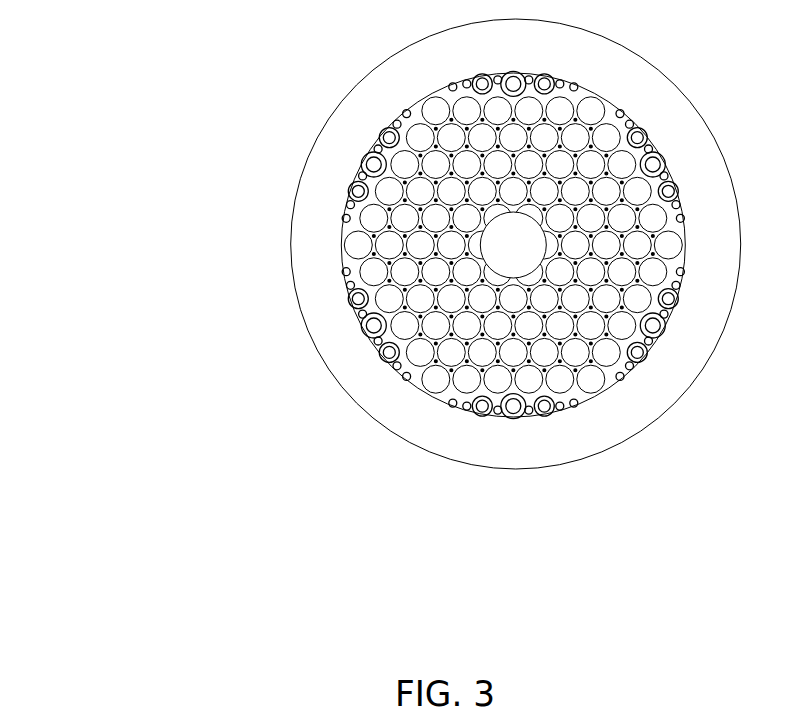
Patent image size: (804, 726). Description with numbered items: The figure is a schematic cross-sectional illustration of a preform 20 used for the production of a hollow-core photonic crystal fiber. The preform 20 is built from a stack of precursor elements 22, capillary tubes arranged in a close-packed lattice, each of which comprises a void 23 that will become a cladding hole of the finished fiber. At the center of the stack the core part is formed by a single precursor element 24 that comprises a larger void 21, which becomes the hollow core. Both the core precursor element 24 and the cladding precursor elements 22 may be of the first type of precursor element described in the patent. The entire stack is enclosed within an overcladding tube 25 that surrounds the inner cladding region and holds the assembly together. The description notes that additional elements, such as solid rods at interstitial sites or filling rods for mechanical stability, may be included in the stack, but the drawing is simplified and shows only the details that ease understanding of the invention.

The preform 20 is at (392, 257).
The void 21 is at (512, 247).
The precursor elements 22 is at (438, 297).
The void 23 is at (448, 297).
The precursor element 24 is at (390, 286).
The overcladding tube 25 is at (362, 110).